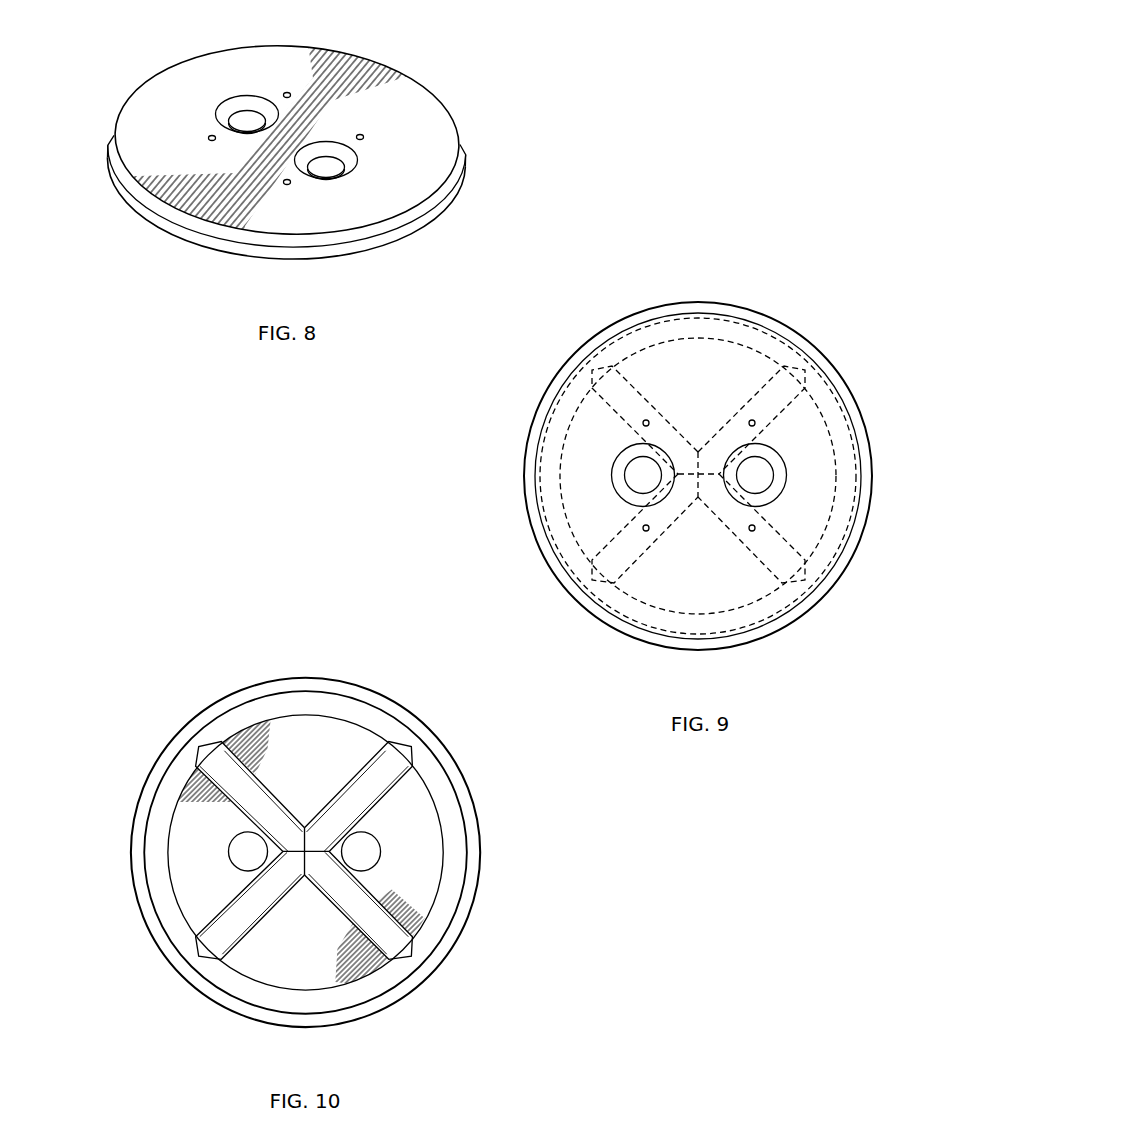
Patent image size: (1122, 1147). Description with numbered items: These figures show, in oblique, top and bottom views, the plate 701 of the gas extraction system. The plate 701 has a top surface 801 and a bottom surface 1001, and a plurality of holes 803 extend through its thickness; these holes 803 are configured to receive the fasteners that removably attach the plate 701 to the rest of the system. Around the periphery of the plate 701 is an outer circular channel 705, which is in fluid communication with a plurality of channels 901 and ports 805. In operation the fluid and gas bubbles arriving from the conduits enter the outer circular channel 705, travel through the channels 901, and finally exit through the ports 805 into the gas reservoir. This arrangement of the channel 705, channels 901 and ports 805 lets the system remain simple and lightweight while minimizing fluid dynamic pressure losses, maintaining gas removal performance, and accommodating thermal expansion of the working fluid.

In FIG. 8, the plate 701 is at (552, 55).
In FIG. 9, the plate 701 is at (488, 391).
In FIG. 10, the plate 701 is at (412, 655).
In FIG. 9, the outer circular channel 705 is at (825, 582).
In FIG. 10, the outer circular channel 705 is at (164, 914).
In FIG. 8, the top surface 801 is at (185, 92).
In FIG. 8, the holes 803 is at (326, 179).
In FIG. 9, the holes 803 is at (612, 469).
In FIG. 10, the holes 803 is at (368, 858).
In FIG. 8, the ports 805 is at (363, 134).
In FIG. 9, the ports 805 is at (648, 421).
In FIG. 9, the channels 901 is at (648, 553).
In FIG. 10, the channels 901 is at (230, 783).
In FIG. 10, the bottom surface 1001 is at (259, 736).